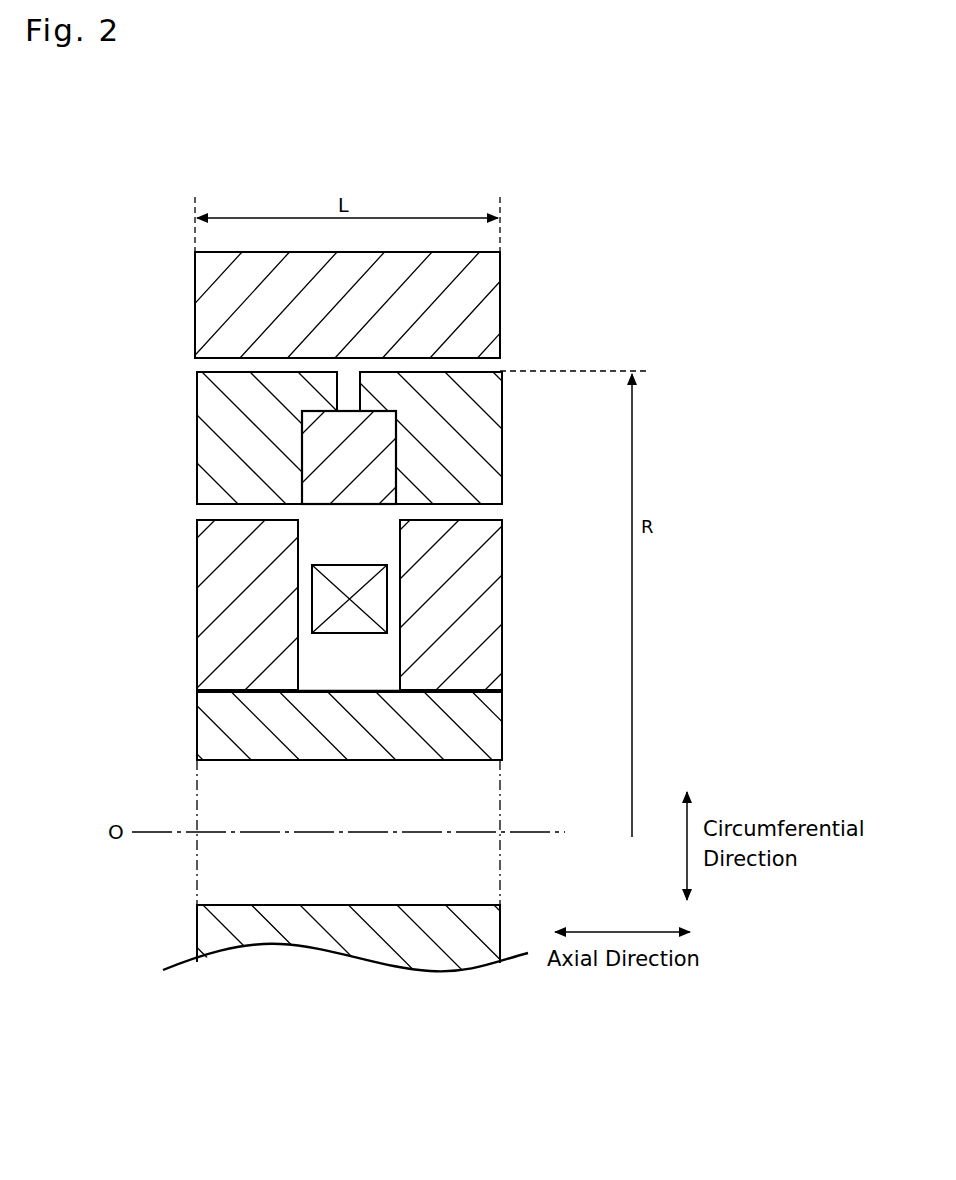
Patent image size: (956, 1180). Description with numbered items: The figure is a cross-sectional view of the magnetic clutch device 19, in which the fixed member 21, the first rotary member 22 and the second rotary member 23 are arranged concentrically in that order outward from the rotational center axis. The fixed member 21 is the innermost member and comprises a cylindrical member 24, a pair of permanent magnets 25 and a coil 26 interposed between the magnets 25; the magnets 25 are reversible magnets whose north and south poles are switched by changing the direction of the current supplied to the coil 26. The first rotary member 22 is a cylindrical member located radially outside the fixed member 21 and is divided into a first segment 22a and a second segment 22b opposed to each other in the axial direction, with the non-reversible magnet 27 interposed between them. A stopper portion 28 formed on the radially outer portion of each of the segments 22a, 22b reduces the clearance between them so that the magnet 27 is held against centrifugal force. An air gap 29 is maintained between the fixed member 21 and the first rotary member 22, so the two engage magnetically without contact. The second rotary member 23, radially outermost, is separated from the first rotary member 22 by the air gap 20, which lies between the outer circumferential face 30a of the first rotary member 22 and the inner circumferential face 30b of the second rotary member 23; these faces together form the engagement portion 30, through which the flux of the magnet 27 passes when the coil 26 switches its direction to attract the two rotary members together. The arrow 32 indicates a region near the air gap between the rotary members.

The clutch device 19 is at (610, 170).
The air gap 20 is at (225, 365).
The fixed member 21 is at (122, 588).
The first rotary member 22 is at (572, 443).
The first segment 22a is at (262, 463).
The second segment 22b is at (477, 463).
The second rotary member 23 is at (207, 304).
The cylindrical member 24 is at (208, 728).
The permanent magnets 25 is at (213, 588).
The coil 26 is at (313, 598).
The non-reversible magnet 27 is at (383, 436).
The stopper portion 28 is at (373, 392).
The air gap 29 is at (208, 512).
The engagement portion 30 is at (592, 320).
The outer circumferential face 30a is at (497, 357).
The inner circumferential face 30b is at (480, 371).
The gap 32 is at (510, 512).